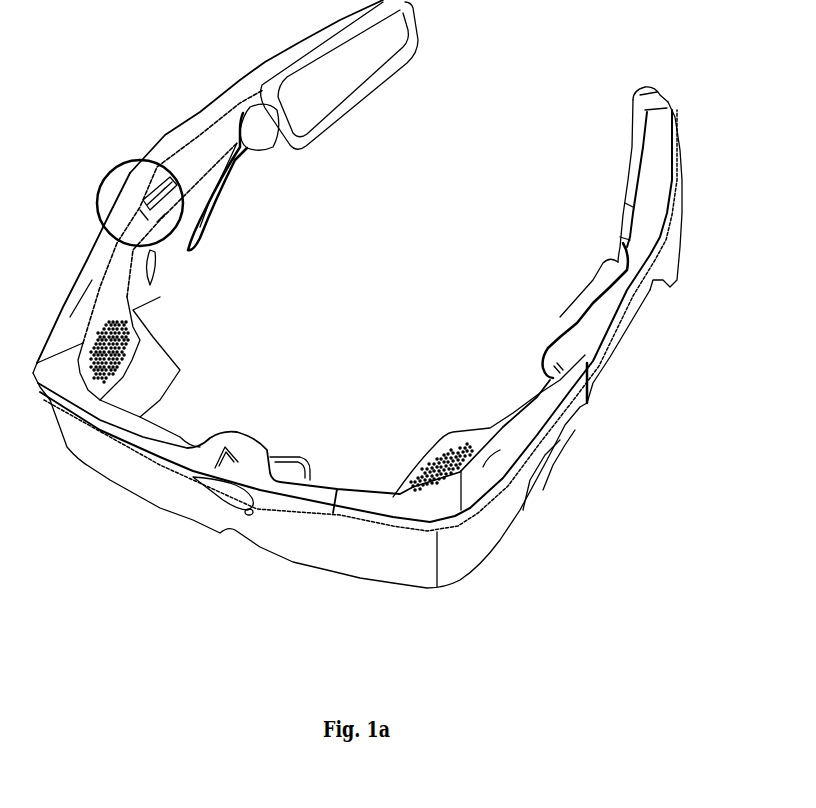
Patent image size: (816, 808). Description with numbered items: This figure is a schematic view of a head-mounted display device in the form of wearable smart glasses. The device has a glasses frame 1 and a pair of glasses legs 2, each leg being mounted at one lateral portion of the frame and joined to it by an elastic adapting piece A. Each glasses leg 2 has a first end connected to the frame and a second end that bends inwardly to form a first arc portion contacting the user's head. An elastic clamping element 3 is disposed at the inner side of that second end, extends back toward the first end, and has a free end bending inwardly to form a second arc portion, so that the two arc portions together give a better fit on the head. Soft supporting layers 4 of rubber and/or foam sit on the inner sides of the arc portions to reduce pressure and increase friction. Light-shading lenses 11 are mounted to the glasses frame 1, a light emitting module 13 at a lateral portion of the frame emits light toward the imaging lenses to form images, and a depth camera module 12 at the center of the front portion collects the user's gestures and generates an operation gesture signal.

The glasses frame 1 is at (302, 495).
The glasses legs 2 is at (660, 143).
The elastic clamping element 3 is at (577, 327).
The soft supporting layers 4 is at (592, 278).
The light-shading lenses 11 is at (120, 480).
The depth camera module 12 is at (230, 497).
The light emitting module 13 is at (452, 438).
The elastic adapting piece A is at (135, 158).